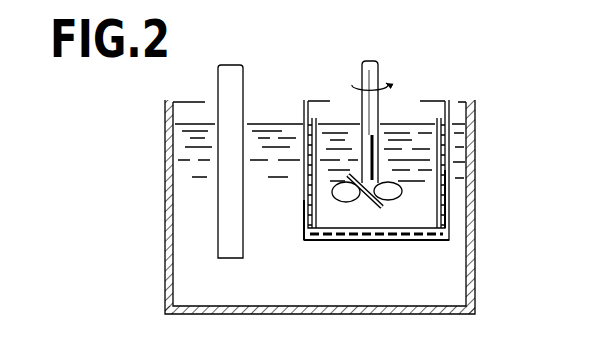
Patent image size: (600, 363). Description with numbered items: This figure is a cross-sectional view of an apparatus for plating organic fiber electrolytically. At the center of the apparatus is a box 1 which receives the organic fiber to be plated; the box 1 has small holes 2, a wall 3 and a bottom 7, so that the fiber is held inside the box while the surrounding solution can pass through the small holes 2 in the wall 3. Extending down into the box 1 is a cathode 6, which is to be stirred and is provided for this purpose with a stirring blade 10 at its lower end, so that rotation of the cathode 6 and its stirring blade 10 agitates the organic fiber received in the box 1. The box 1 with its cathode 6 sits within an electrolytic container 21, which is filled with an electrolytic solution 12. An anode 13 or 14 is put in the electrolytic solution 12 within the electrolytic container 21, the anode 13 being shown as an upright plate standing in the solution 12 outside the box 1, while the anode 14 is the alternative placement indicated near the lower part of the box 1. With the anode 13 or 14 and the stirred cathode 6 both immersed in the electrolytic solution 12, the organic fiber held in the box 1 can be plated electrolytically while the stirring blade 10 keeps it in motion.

The box 1 is at (451, 157).
The small holes 2 is at (473, 115).
The wall 3 is at (447, 188).
The cathode 6 is at (372, 73).
The bottom 7 is at (433, 240).
The stirring blade 10 is at (392, 197).
The electrolytic solution 12 is at (433, 288).
The anode 13 is at (236, 104).
The anode 14 is at (313, 210).
The electrolytic container 21 is at (164, 225).